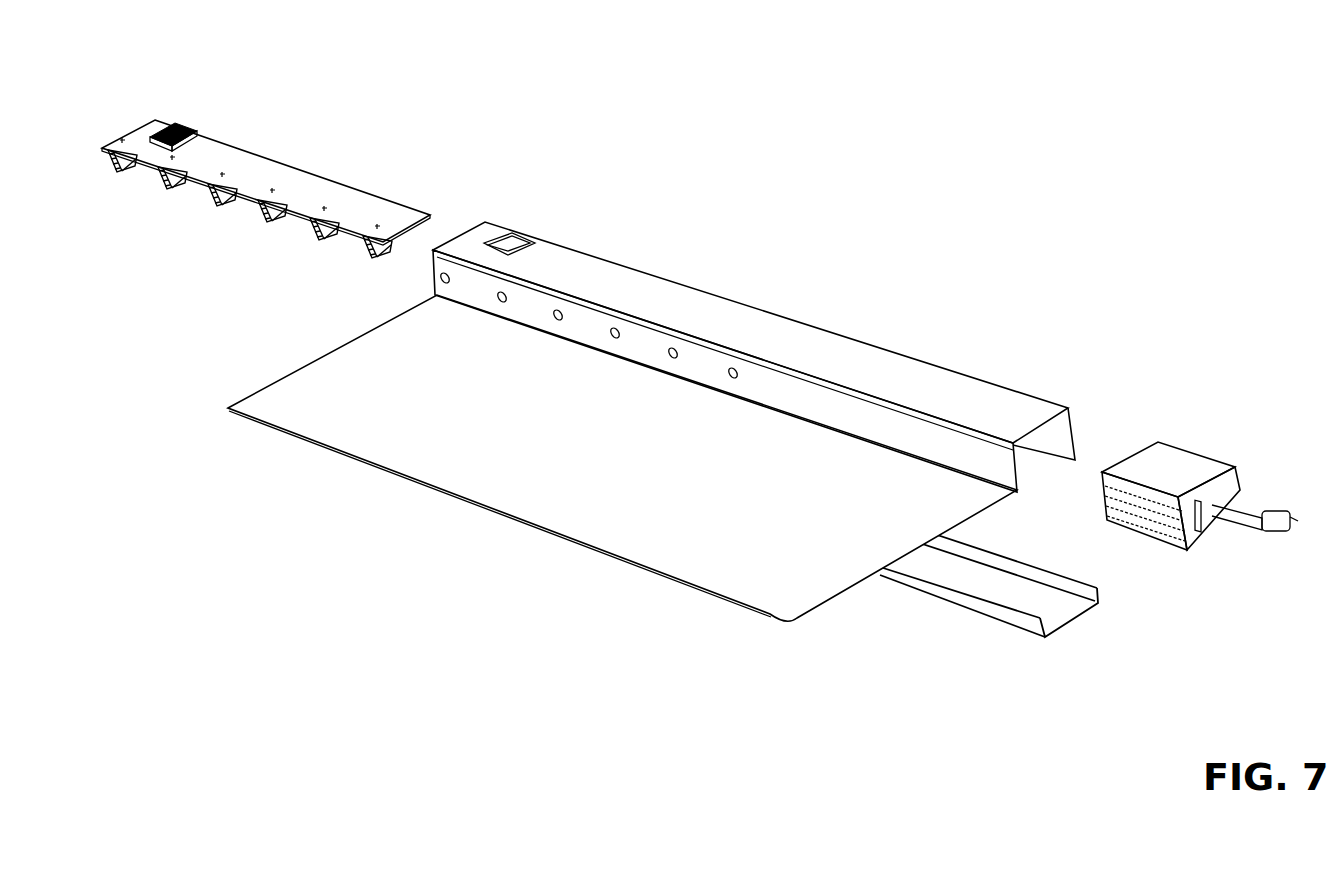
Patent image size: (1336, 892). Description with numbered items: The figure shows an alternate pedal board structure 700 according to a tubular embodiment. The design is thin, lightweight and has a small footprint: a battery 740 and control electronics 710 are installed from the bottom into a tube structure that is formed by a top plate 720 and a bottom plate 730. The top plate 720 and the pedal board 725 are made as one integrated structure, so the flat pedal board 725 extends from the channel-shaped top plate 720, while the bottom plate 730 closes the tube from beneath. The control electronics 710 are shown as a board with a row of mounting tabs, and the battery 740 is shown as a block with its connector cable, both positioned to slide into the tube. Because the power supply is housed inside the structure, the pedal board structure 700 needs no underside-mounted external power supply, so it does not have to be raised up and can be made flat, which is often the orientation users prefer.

The pedal board structure 700 is at (976, 98).
The control electronics 710 is at (321, 190).
The top plate 720 is at (713, 312).
The pedal board 725 is at (798, 596).
The bottom plate 730 is at (993, 636).
The battery 740 is at (1178, 468).